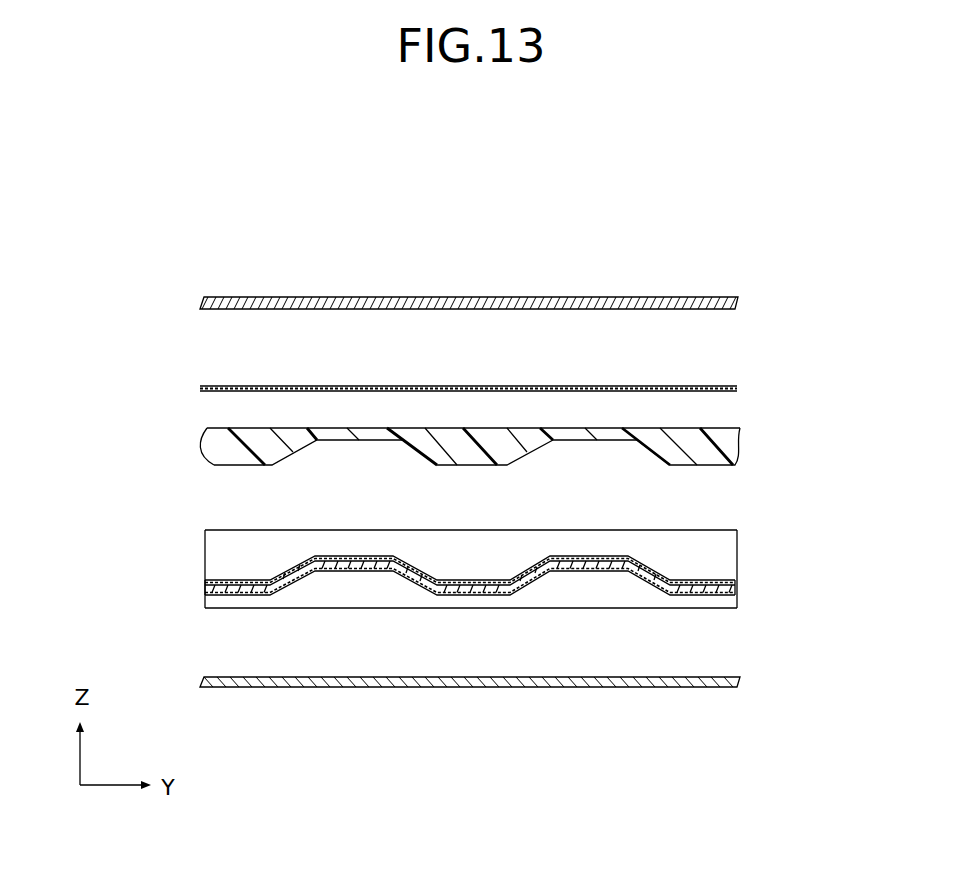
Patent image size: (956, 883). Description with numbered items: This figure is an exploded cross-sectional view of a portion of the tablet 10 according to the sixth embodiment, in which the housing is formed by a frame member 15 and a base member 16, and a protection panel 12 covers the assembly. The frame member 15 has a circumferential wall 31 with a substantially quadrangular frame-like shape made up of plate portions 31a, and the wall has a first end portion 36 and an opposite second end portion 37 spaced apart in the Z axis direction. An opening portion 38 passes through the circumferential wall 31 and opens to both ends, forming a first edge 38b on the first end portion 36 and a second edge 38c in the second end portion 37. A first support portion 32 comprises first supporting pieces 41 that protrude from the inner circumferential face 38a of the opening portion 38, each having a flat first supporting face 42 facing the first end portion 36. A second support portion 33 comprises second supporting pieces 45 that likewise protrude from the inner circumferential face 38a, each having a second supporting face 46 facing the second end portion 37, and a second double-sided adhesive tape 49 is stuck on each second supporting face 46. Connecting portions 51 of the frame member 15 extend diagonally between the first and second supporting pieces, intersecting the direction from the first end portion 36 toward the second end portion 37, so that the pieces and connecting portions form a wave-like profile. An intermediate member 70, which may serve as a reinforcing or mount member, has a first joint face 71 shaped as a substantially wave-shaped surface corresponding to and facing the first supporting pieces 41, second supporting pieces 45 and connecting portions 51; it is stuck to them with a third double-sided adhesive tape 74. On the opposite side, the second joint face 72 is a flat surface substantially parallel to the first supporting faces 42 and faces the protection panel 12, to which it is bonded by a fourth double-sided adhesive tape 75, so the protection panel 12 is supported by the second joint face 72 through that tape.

The tablet 10 is at (246, 248).
The protection panel 12 is at (310, 296).
The fourth double-sided adhesive tape 75 is at (602, 386).
The intermediate member 70 is at (223, 443).
The first joint face 71 is at (248, 428).
The second joint face 72 is at (215, 466).
The first end portion 36 is at (640, 443).
The opening portion 38 is at (492, 540).
The inner circumferential face 38a is at (440, 555).
The first edge 38b is at (410, 530).
The second edge 38c is at (365, 608).
The circumferential wall 31 is at (220, 538).
The plate portion 31a is at (228, 560).
The first support portion 32 is at (632, 552).
The third double-sided adhesive tape 74 is at (713, 581).
The frame member 15 is at (206, 581).
The first supporting piece 41 is at (335, 556).
The first supporting face 42 is at (355, 556).
The connecting portion 51 is at (407, 597).
The second support portion 33 is at (730, 606).
The base member 16 is at (223, 687).
The second supporting piece 45 is at (252, 596).
The second supporting face 46 is at (233, 596).
The second double-sided adhesive tape 49 is at (500, 596).
The second end portion 37 is at (633, 608).